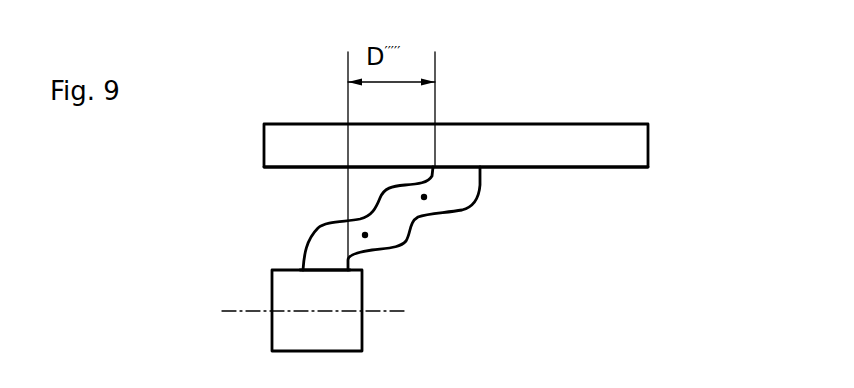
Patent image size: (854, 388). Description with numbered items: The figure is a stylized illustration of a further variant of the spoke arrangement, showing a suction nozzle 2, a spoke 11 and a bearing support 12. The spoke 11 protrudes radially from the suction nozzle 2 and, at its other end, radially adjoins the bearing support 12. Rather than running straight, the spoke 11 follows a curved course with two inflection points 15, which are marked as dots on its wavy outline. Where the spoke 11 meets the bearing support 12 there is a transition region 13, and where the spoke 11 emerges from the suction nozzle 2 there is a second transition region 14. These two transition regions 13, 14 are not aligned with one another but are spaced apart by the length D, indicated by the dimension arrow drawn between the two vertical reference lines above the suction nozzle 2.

The suction nozzle 2 is at (613, 138).
The spoke 11 is at (460, 183).
The bearing support 12 is at (307, 324).
The transition region 13 is at (328, 270).
The transition region 14 is at (458, 163).
The inflection points 15 is at (365, 235).